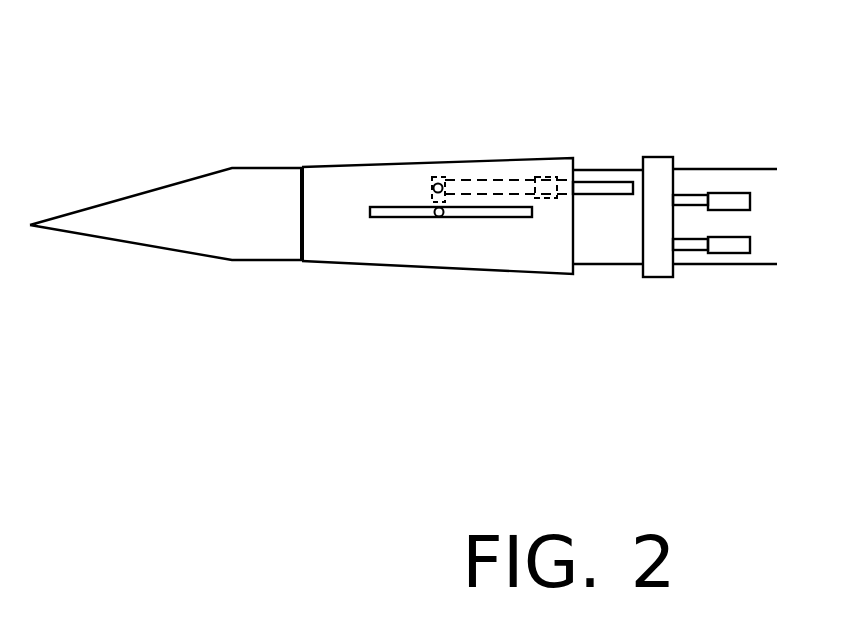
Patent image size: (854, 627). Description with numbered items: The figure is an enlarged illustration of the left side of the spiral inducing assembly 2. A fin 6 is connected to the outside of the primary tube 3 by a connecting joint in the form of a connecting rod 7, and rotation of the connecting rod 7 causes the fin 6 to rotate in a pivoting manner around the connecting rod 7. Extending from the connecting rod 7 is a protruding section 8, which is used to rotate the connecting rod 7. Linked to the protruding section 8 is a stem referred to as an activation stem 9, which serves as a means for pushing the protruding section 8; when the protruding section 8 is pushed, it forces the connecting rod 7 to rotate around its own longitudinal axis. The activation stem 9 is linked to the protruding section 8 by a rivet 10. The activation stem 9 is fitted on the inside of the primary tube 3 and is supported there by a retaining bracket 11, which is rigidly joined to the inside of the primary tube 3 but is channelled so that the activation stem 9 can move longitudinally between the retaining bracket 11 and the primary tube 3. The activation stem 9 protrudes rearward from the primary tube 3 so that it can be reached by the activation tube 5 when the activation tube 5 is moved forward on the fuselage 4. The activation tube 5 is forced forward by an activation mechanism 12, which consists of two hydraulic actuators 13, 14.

The spiral inducing assembly 2 is at (409, 330).
The primary tube 3 is at (340, 252).
The fuselage 4 is at (588, 247).
The activation tube 5 is at (663, 167).
The fin 6 is at (380, 212).
The connecting rod 7 is at (441, 216).
The protruding section 8 is at (435, 185).
The activation stem 9 is at (603, 187).
The rivet 10 is at (440, 183).
The retaining bracket 11 is at (542, 177).
The activation mechanism 12 is at (697, 255).
The hydraulic actuator 13 is at (731, 203).
The hydraulic actuator 14 is at (740, 245).